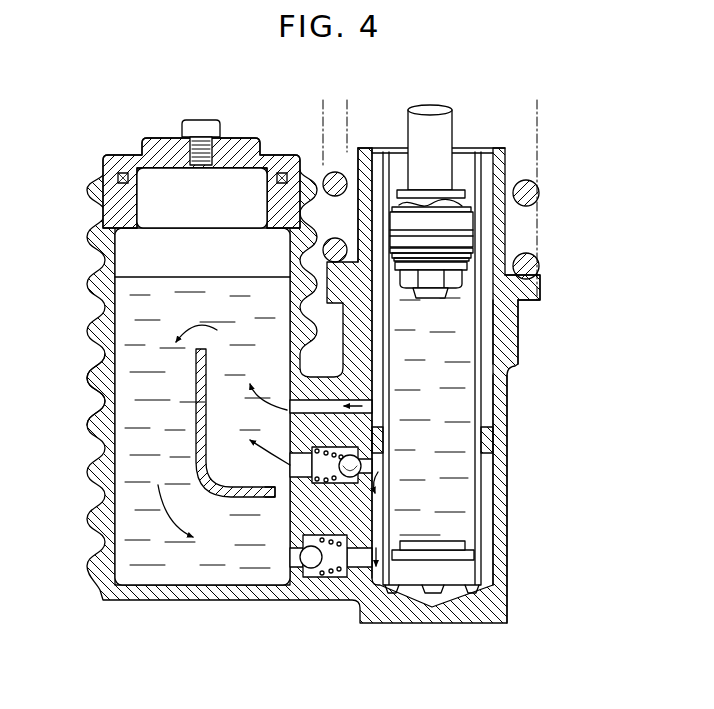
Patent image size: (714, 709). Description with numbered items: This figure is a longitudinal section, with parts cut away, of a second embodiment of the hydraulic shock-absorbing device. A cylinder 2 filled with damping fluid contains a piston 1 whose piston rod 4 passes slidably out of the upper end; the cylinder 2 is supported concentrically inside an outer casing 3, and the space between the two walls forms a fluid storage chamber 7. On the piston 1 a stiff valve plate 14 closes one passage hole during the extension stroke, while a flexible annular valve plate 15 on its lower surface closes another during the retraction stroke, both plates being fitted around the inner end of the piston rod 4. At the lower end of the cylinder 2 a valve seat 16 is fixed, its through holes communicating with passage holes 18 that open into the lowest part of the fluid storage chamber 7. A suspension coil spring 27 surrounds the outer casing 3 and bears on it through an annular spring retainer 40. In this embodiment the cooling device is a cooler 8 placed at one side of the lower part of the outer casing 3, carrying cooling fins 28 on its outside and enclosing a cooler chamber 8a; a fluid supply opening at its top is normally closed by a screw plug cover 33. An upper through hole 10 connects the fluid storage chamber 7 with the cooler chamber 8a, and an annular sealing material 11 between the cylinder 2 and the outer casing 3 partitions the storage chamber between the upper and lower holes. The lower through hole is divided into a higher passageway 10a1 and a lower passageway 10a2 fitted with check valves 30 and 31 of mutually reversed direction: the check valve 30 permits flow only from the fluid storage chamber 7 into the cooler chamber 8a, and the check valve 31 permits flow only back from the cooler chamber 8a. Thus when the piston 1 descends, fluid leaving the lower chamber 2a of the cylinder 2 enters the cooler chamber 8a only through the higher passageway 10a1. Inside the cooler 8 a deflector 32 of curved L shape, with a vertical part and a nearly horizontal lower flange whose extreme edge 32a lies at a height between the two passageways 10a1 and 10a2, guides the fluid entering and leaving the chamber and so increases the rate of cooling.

The piston 1 is at (467, 218).
The cylinder 2 is at (483, 494).
The lower chamber 2a is at (468, 374).
The outer casing 3 is at (503, 407).
The piston rod 4 is at (443, 133).
The fluid storage chamber 7 is at (490, 318).
The cooler 8 is at (213, 601).
The cooler chamber 8a is at (128, 323).
The upper through hole 10 is at (288, 400).
The higher passageway 10a1 is at (290, 467).
The lower passageway 10a2 is at (356, 566).
The annular sealing material 11 is at (492, 441).
The valve plate 14 is at (468, 206).
The annular valve plate 15 is at (473, 252).
The valve seat 16 is at (470, 562).
The passage holes 18 is at (392, 590).
The suspension coil spring 27 is at (323, 178).
The cooling fins 28 is at (95, 396).
The check valve 30 is at (365, 467).
The check valve 31 is at (313, 573).
The deflector 32 is at (245, 498).
The extreme edge 32a is at (276, 488).
The screw plug cover 33 is at (244, 152).
The annular spring retainer 40 is at (525, 289).